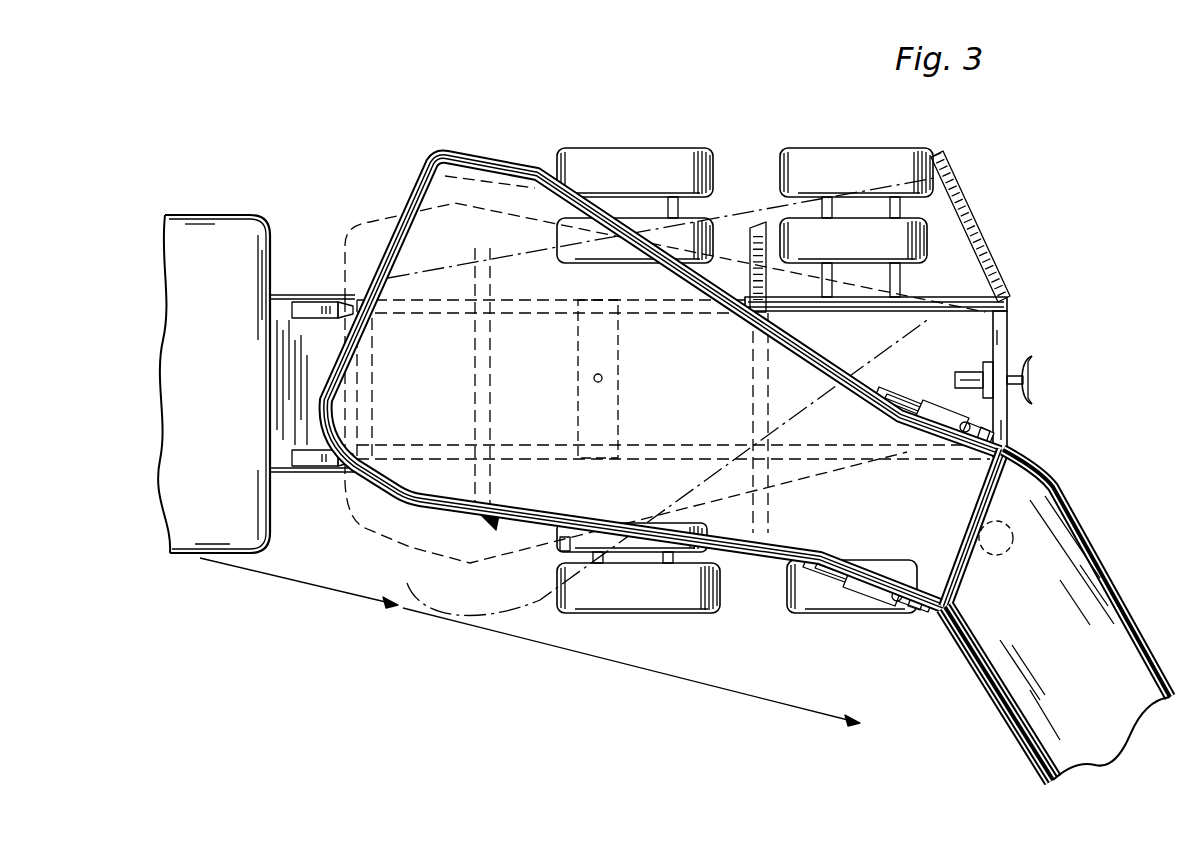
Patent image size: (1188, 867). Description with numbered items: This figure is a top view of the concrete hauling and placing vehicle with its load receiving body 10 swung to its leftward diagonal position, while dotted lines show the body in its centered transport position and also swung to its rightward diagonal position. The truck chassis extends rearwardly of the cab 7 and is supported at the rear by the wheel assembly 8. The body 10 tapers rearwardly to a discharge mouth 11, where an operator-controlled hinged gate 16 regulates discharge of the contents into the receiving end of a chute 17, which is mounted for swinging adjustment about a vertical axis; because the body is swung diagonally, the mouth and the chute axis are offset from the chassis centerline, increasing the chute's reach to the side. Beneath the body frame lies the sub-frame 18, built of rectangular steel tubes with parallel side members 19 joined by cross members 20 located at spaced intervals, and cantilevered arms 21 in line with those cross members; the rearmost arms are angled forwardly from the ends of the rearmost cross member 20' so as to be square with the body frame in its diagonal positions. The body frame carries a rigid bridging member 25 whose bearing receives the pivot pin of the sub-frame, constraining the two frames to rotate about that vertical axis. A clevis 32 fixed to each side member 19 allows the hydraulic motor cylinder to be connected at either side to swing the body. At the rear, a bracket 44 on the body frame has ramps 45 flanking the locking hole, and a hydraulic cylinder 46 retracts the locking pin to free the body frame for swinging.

The cab 7 is at (193, 245).
The wheel assembly 8 is at (756, 128).
The load receiving body 10 is at (490, 142).
The discharge mouth 11 is at (1037, 439).
The hinged gate 16 is at (1016, 484).
The chute 17 is at (1091, 585).
The sub-frame 18 is at (1041, 283).
The side members 19 is at (977, 301).
The cross members 20 is at (667, 395).
The rearmost cross member 20' is at (1044, 384).
The cantilevered arms 21 is at (757, 230).
The bridging member 25 is at (600, 348).
The clevis 32 is at (354, 298).
The bracket 44 is at (1033, 381).
The ramps 45 is at (1030, 363).
The hydraulic cylinder 46 is at (967, 378).